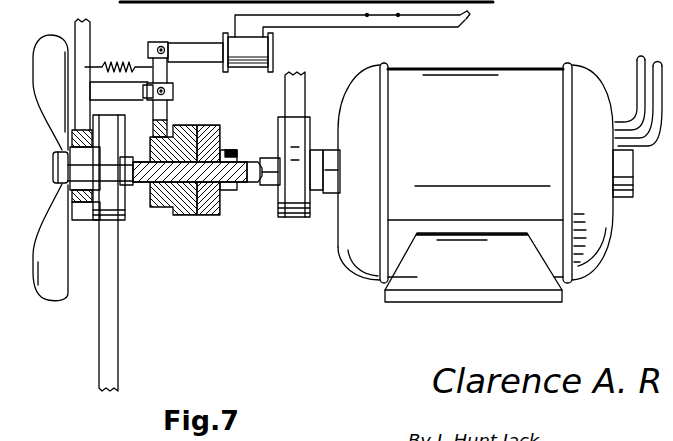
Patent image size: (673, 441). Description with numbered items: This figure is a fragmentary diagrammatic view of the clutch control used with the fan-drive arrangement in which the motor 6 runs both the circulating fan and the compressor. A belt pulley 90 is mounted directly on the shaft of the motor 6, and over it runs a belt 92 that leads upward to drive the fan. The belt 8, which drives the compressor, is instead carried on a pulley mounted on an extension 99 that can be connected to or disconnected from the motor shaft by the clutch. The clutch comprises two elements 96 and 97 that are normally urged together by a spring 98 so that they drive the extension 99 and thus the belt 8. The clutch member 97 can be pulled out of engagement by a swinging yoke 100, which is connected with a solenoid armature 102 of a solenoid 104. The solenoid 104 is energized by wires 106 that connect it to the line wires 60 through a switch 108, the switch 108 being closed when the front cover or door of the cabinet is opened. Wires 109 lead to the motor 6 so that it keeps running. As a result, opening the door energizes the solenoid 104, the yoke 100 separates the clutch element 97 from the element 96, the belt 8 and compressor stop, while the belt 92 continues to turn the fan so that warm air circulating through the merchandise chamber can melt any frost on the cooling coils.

The motor 6 is at (485, 173).
The belt 8 is at (110, 262).
The wires 60 is at (481, 16).
The belt pulley 90 is at (278, 207).
The belt 92 is at (290, 95).
The clutch element 96 is at (208, 125).
The clutch member 97 is at (192, 117).
The spring 98 is at (118, 56).
The extension 99 is at (140, 182).
The swinging yoke 100 is at (167, 77).
The solenoid armature 102 is at (206, 46).
The solenoid 104 is at (258, 68).
The wires 106 is at (307, 27).
The switch 108 is at (376, 15).
The wires 109 is at (660, 80).